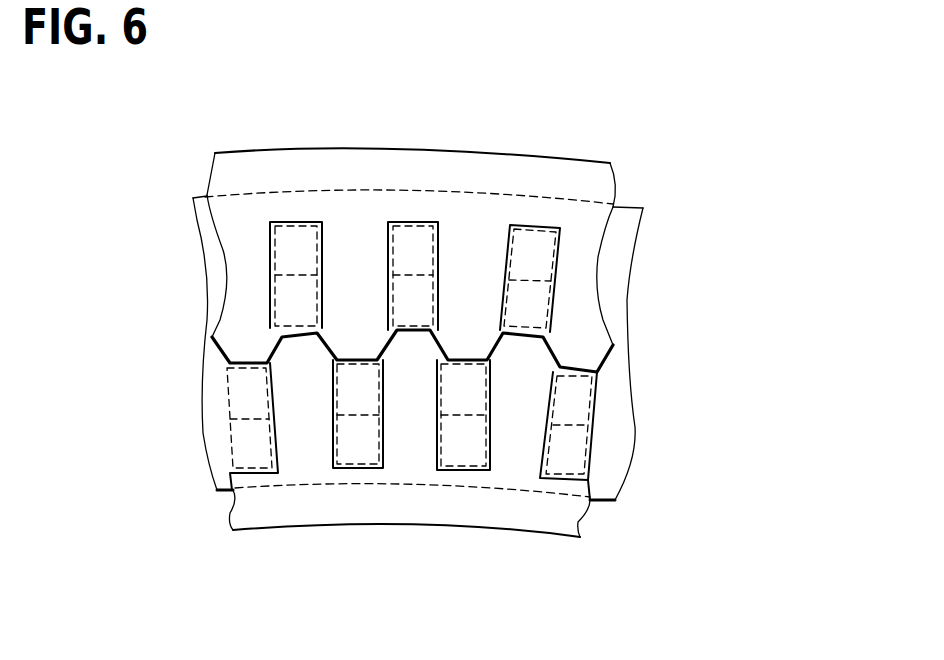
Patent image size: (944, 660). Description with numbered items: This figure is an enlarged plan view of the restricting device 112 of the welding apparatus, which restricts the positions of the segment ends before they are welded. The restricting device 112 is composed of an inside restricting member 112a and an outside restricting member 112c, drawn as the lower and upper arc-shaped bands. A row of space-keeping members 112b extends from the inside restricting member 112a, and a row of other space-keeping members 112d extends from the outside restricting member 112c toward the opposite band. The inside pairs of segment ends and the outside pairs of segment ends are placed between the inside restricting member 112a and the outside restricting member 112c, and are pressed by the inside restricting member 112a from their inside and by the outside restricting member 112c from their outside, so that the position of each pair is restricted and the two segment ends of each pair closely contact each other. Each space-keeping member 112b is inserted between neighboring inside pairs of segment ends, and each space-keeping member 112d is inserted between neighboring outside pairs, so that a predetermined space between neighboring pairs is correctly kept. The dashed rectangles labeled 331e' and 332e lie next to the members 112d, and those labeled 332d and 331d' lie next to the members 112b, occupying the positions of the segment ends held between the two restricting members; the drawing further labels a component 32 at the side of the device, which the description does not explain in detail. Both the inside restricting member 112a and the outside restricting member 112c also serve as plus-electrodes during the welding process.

The restricting device 112 is at (470, 316).
The inside restricting member 112a is at (568, 518).
The space-keeping member 112b is at (522, 372).
The outside restricting member 112c is at (583, 167).
The space-keeping member 112d is at (358, 322).
The insulator 32 is at (618, 260).
The first coil conductor 331e' is at (200, 276).
The second coil conductor 332e is at (290, 298).
The second coil conductor 332d is at (237, 387).
The first coil conductor 331d' is at (334, 435).